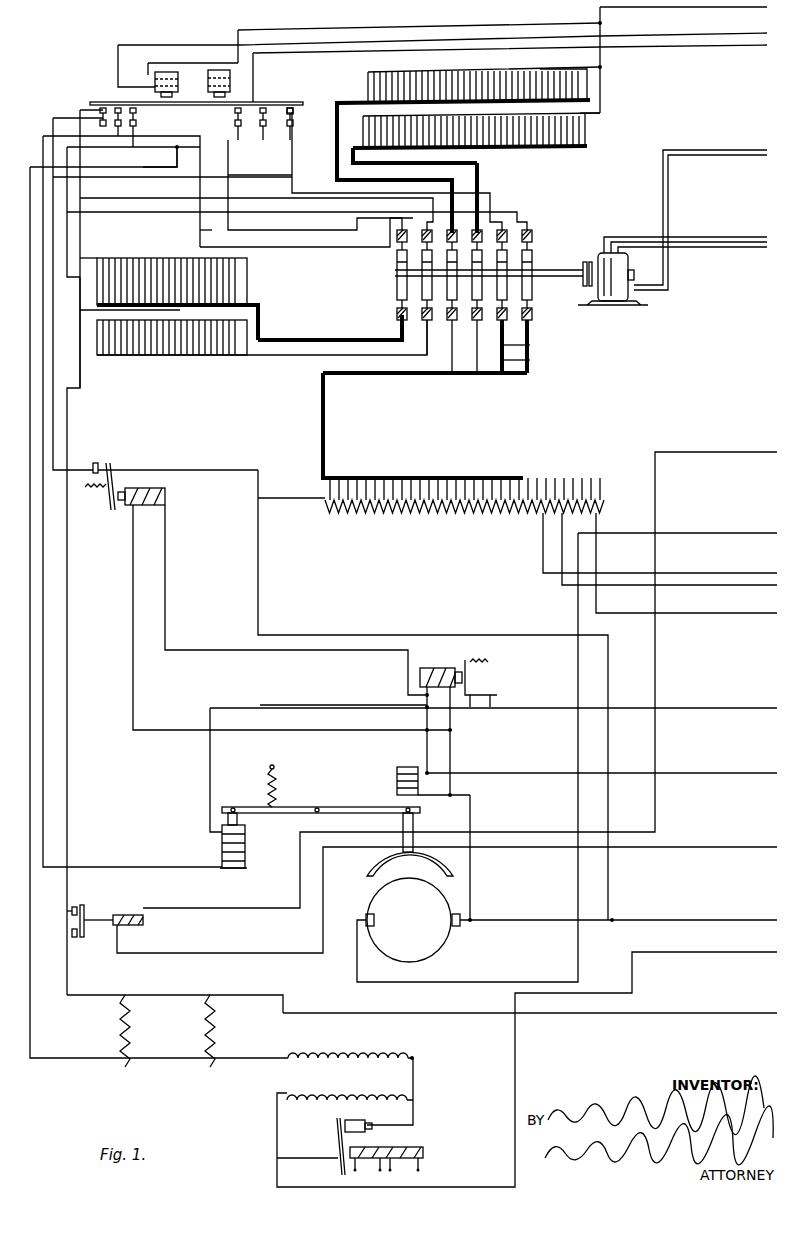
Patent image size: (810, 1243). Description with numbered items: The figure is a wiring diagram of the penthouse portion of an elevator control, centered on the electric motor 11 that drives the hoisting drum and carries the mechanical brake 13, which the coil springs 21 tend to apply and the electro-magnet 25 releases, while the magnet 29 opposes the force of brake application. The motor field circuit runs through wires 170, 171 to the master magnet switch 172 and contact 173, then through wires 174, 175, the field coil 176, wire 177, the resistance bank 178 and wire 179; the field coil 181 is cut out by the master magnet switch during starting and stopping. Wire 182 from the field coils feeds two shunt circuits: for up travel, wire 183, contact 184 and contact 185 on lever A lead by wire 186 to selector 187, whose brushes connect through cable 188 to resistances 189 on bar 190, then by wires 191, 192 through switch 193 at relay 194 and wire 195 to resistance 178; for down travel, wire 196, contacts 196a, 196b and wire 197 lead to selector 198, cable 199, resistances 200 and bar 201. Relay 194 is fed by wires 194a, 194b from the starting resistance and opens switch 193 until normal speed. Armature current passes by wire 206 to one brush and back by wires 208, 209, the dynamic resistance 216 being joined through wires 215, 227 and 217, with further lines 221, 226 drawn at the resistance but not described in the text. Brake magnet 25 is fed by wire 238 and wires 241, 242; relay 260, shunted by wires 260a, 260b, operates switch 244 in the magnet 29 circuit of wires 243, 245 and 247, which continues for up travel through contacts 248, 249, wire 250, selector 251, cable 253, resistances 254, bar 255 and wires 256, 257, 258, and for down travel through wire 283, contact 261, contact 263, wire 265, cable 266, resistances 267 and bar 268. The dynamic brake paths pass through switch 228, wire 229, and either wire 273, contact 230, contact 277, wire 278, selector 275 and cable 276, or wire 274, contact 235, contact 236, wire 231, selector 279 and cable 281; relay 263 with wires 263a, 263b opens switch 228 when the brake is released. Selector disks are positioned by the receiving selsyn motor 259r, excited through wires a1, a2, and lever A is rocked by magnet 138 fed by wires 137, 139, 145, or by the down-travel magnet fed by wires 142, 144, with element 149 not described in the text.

The electric motor 11 is at (385, 905).
The mechanical brake 13 is at (372, 873).
The coil springs 21 is at (276, 800).
The electro-magnet 25 is at (397, 784).
The magnet 29 is at (247, 848).
The wire 137 is at (700, 36).
The magnet 138 is at (182, 81).
The wire 139 is at (212, 70).
The wire 142 is at (725, 46).
The wire 144 is at (255, 55).
The wire 145 is at (420, 28).
The coil 149 is at (225, 79).
The wire 170 is at (722, 952).
The wire 171 is at (340, 1152).
The master magnet switch 172 is at (337, 1135).
The contact 173 is at (345, 1122).
The wire 174 is at (413, 1120).
The wire 175 is at (413, 1080).
The field coil 176 is at (345, 1052).
The wire 177 is at (262, 1058).
The resistance bank 178 is at (205, 1028).
The wire 179 is at (250, 988).
The field coil 181 is at (335, 1098).
The wire 182 is at (30, 706).
The wire 183 is at (143, 167).
The contact 184 is at (140, 124).
The contact 185 is at (137, 100).
The wire 186 is at (200, 230).
The selector 187 is at (397, 300).
The cable 188 is at (332, 337).
The resistances 189 is at (262, 300).
The bar 190 is at (248, 258).
The wire 191 is at (92, 258).
The wire 192 is at (80, 380).
The switch 193 is at (85, 915).
The relay 194 is at (145, 922).
The wire 194a is at (200, 908).
The wire 194b is at (447, 890).
The wire 195 is at (67, 980).
The wire 196 is at (212, 163).
The contact 196a is at (217, 115).
The contact 196b is at (278, 44).
The wire 197 is at (380, 247).
The selector 198 is at (427, 330).
The cable 199 is at (323, 373).
The resistances 200 is at (262, 340).
The bar 201 is at (172, 310).
The wire 206 is at (485, 982).
The wire 208 is at (490, 920).
The wire 209 is at (722, 920).
The wire 215 is at (660, 543).
The dynamic resistance 216 is at (450, 520).
The wire 217 is at (258, 590).
The conductor 221 is at (669, 557).
The conductor 226 is at (686, 563).
The wire 227 is at (320, 500).
The relay switch 228 is at (112, 468).
The wire 229 is at (53, 437).
The contact 230 is at (100, 107).
The wire 231 is at (282, 198).
The contact 235 is at (293, 111).
The contact 236 is at (365, 171).
The wire 238 is at (601, 764).
The wire 241 is at (418, 813).
The wire 242 is at (472, 808).
The wire 243 is at (493, 759).
The switch 244 is at (480, 680).
The wire 245 is at (295, 707).
The wire 247 is at (43, 665).
The contact 248 is at (103, 120).
The contact 249 is at (118, 108).
The wire 250 is at (100, 243).
The selector 251 is at (478, 330).
The cable 253 is at (480, 190).
The resistances 254 is at (43, 136).
The bar 255 is at (585, 100).
The wire 256 is at (600, 68).
The wire 257 is at (600, 57).
The wire 258 is at (725, 7).
The receiving selsyn motor 259r is at (606, 266).
The relay 260 is at (432, 667).
The wire 260a is at (427, 752).
The wire 260b is at (450, 752).
The contact 261 is at (453, 325).
The relay 263 is at (166, 496).
The wire 263a is at (165, 570).
The wire 263b is at (133, 568).
The wire 265 is at (353, 150).
The cable 266 is at (455, 180).
The resistances 267 is at (462, 76).
The bar 268 is at (588, 74).
The wire 273 is at (53, 118).
The wire 274 is at (177, 167).
The selector 275 is at (533, 306).
The cable 276 is at (530, 358).
The contact 277 is at (80, 110).
The wire 278 is at (67, 222).
The selector 279 is at (530, 343).
The cable 281 is at (530, 373).
The wire 283 is at (258, 155).
The wire a1 is at (700, 204).
The wire a2 is at (745, 160).
The lever A is at (282, 73).